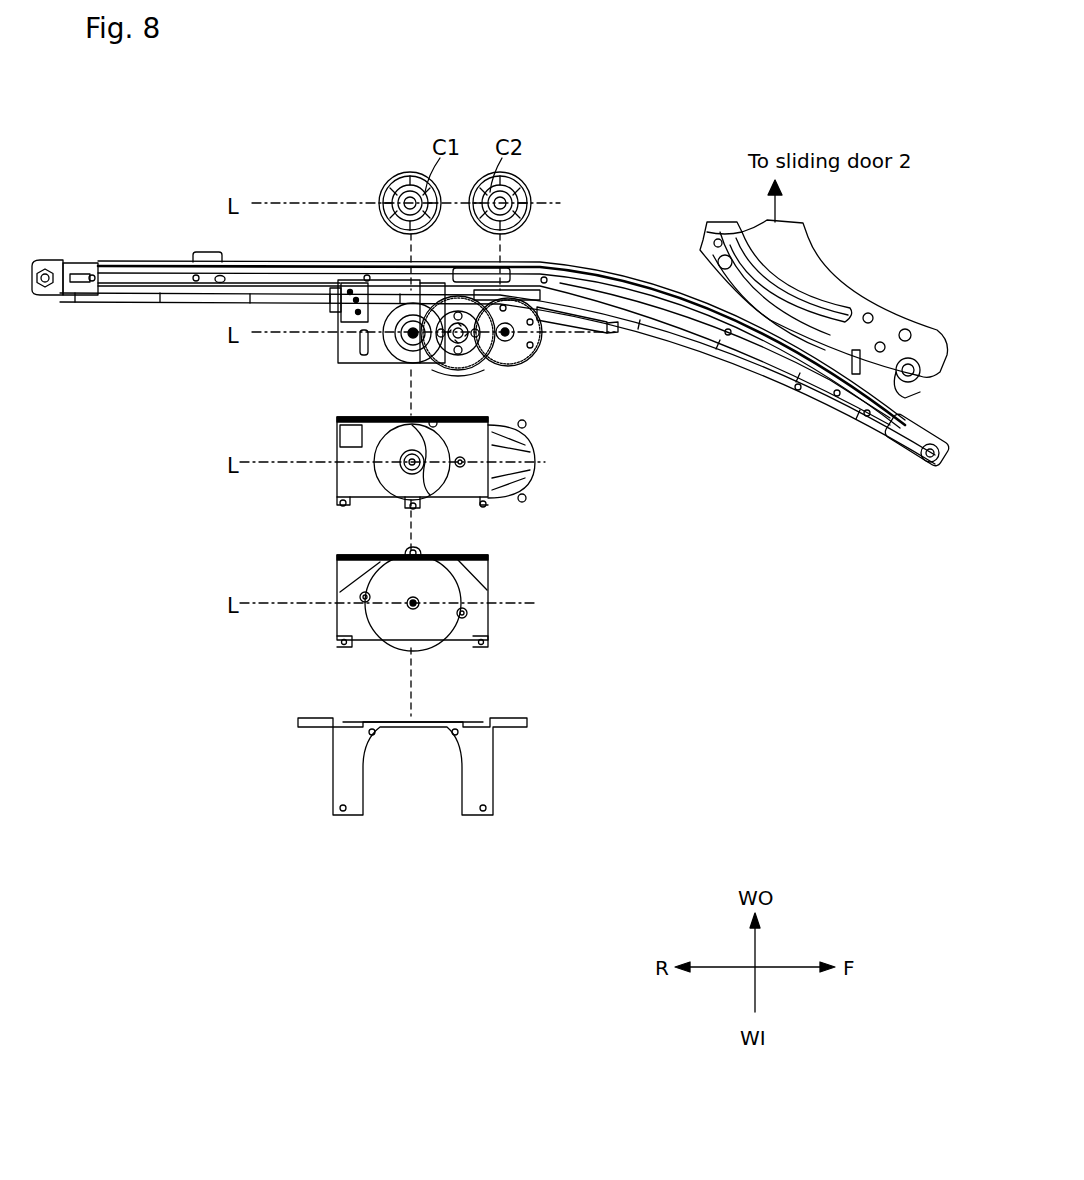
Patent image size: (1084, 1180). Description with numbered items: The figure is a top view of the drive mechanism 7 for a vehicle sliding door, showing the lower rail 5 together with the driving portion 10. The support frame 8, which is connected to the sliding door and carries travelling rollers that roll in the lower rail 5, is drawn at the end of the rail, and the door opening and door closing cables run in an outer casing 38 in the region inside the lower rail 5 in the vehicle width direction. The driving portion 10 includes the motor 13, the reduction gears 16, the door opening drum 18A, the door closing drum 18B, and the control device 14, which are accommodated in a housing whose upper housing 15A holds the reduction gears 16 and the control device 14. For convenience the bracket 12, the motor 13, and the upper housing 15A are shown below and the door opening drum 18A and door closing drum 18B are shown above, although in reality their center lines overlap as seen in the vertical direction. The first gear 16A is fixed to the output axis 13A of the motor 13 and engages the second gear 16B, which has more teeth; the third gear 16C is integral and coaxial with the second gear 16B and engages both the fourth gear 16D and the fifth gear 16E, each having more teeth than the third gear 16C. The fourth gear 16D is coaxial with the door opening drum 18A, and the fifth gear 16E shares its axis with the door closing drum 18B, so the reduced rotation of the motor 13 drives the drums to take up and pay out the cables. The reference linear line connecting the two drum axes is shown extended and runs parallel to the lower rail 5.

The lower rail 5 is at (127, 283).
The drive mechanism 7 is at (228, 522).
The support frame 8 is at (808, 252).
The driving portion 10 is at (604, 214).
The bracket 12 is at (493, 776).
The motor 13 is at (482, 592).
The output axis 13A is at (410, 608).
The control device 14 is at (385, 298).
The upper housing 15A is at (545, 462).
The reduction gears 16 is at (318, 372).
The first gear 16A is at (402, 340).
The second gear 16B is at (467, 340).
The third gear 16C is at (472, 350).
The fourth gear 16D is at (410, 308).
The fifth gear 16E is at (527, 330).
The door opening drum 18A is at (385, 195).
The door closing drum 18B is at (517, 192).
The outer casing 38 is at (205, 305).